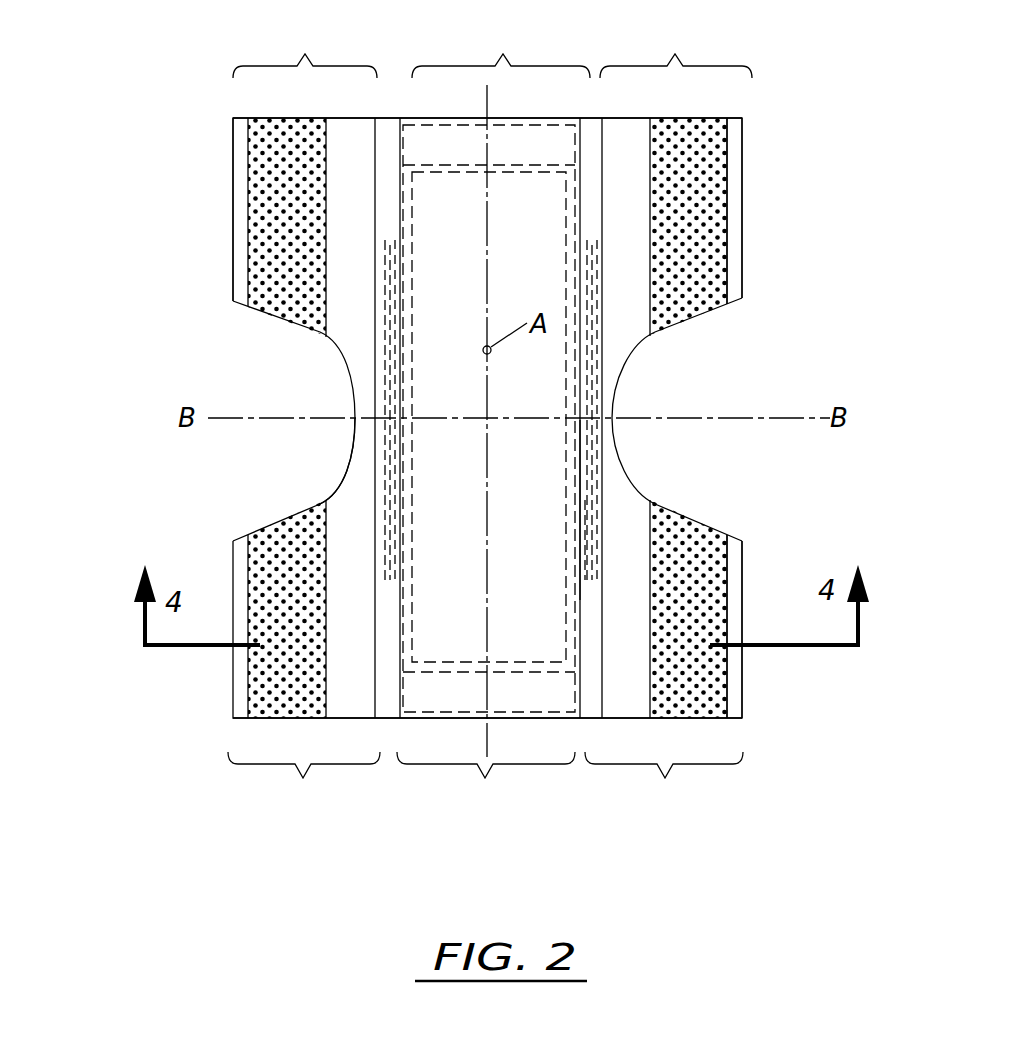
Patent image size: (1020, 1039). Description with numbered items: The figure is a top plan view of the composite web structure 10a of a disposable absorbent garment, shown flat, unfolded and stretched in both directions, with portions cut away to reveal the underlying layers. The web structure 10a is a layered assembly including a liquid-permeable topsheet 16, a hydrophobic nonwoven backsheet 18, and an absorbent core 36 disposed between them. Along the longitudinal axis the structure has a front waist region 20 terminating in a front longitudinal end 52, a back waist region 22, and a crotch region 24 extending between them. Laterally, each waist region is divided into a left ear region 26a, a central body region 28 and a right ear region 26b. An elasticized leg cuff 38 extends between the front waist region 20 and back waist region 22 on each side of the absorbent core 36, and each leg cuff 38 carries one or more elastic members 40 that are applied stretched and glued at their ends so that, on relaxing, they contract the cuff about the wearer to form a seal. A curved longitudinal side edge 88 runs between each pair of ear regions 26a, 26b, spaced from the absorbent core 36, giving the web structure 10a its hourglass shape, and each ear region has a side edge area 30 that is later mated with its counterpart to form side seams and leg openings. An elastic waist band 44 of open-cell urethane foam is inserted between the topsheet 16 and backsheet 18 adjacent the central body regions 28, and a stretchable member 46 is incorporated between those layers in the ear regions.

The composite web structure 10a is at (205, 386).
The topsheet 16 is at (548, 505).
The nonwoven backsheet 18 is at (355, 483).
The front waist region 20 is at (170, 221).
The back waist region 22 is at (205, 752).
The crotch region 24 is at (275, 371).
The left ear region 26a is at (304, 421).
The right ear region 26b is at (668, 421).
The central body region 28 is at (493, 421).
The side edge area 30 is at (735, 255).
The absorbent core 36 is at (465, 590).
The elasticized leg cuff 38 is at (590, 400).
The elastic member 40 is at (585, 530).
The elastic waist band 44 is at (437, 690).
The stretchable member 46 is at (272, 558).
The front longitudinal end 52 is at (742, 117).
The longitudinal side edge 88 is at (645, 345).